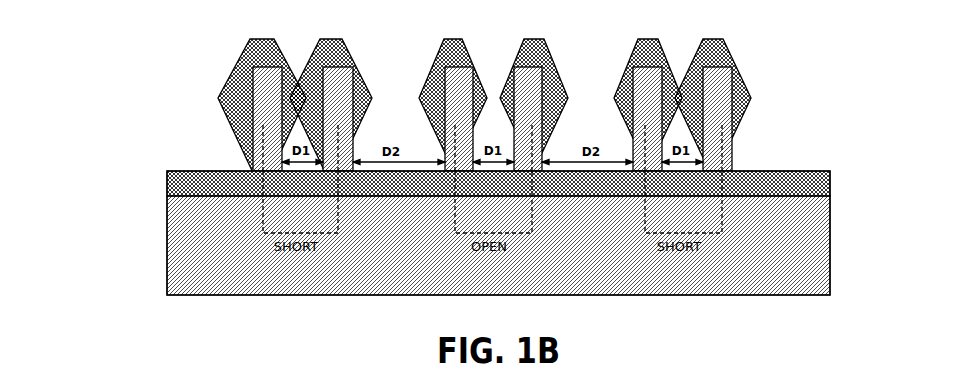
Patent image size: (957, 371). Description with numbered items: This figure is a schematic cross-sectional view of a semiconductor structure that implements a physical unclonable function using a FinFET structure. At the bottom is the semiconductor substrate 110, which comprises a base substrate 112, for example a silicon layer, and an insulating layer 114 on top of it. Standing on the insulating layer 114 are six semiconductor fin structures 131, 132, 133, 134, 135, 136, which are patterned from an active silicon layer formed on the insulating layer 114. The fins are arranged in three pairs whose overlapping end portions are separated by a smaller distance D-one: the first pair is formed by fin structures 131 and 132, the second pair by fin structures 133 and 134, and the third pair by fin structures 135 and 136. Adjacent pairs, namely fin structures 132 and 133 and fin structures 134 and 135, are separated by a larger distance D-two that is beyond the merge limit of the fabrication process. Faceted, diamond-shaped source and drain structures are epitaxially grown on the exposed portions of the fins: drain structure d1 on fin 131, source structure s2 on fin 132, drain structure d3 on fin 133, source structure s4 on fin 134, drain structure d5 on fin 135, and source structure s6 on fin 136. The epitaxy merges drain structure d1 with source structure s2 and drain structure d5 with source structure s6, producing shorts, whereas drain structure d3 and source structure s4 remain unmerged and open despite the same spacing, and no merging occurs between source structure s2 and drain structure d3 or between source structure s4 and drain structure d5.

The semiconductor substrate 110 is at (431, 229).
The base substrate 112 is at (476, 245).
The insulating layer 114 is at (167, 185).
The semiconductor fin structure 131 is at (258, 97).
The semiconductor fin structure 132 is at (328, 97).
The semiconductor fin structure 133 is at (449, 97).
The semiconductor fin structure 134 is at (518, 97).
The semiconductor fin structure 135 is at (638, 97).
The semiconductor fin structure 136 is at (708, 97).
The drain structure d1 is at (257, 38).
The source structure s2 is at (332, 38).
The drain structure d3 is at (452, 38).
The source structure s4 is at (533, 38).
The drain structure d5 is at (647, 38).
The source structure s6 is at (712, 38).